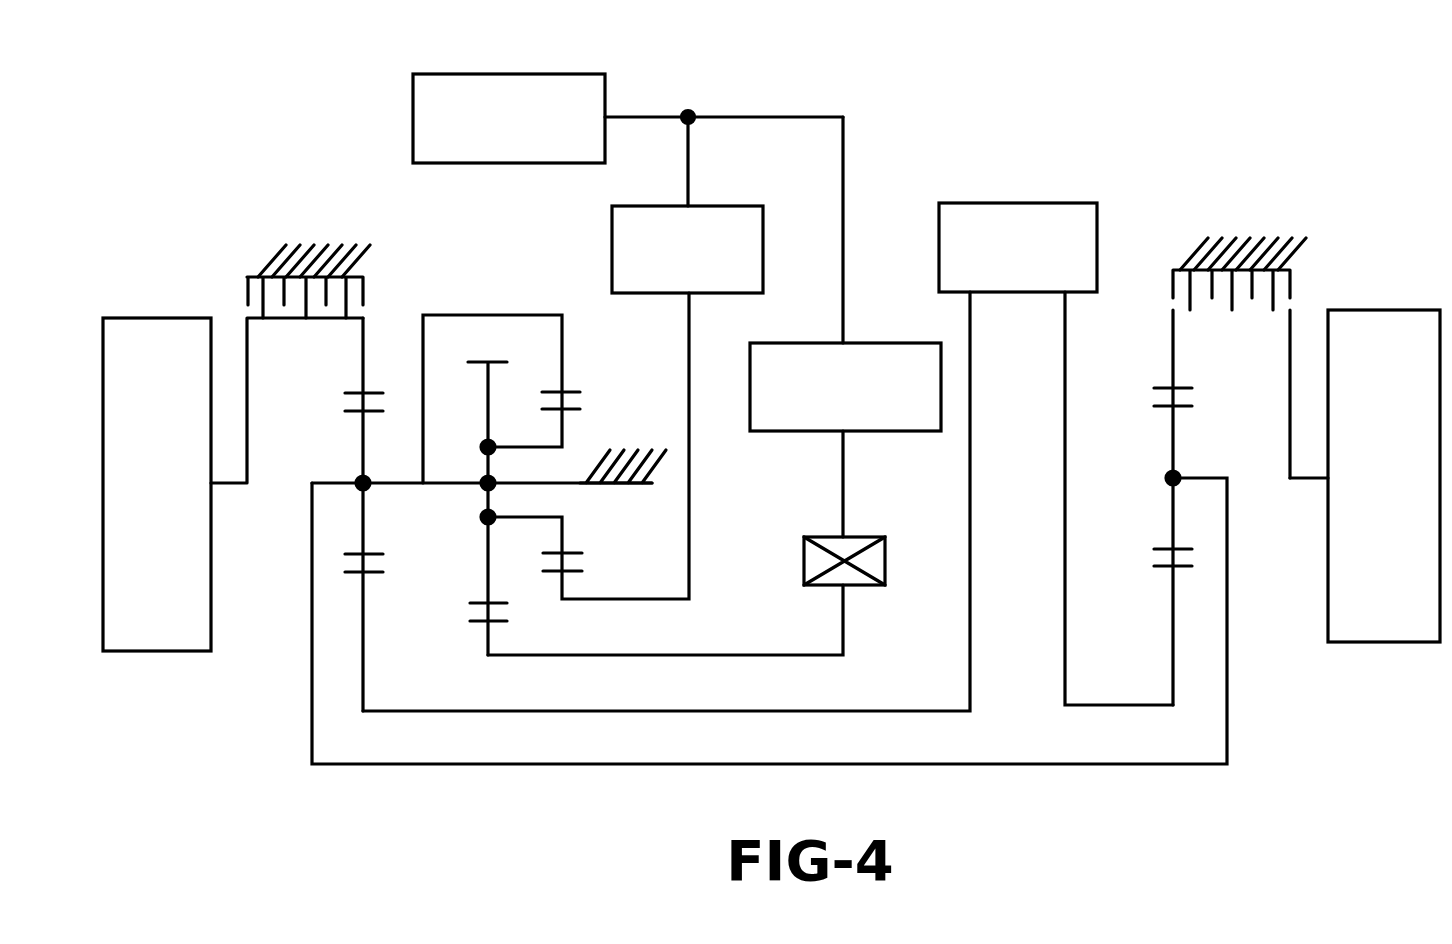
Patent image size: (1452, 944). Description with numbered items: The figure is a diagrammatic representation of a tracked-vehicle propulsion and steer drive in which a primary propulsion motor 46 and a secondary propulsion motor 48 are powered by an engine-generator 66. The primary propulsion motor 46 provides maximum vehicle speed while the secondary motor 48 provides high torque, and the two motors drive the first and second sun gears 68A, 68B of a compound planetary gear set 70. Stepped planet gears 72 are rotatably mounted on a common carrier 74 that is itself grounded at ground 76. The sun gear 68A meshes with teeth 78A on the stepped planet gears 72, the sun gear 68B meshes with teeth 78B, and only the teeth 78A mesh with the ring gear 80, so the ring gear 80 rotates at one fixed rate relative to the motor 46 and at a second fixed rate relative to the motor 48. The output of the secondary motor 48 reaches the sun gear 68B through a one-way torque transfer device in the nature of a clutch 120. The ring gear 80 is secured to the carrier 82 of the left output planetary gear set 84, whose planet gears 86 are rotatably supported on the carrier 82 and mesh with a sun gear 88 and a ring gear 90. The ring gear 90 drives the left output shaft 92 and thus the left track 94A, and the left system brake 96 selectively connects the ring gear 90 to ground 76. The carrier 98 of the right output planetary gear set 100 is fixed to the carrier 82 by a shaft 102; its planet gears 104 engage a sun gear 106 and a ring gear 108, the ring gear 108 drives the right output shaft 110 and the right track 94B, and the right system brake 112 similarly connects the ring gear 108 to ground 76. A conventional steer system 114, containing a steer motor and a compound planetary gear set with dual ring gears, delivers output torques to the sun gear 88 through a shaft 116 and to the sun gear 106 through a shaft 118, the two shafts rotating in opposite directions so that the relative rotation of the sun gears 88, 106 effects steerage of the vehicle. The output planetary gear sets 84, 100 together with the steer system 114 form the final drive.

The primary propulsion motor 46 is at (738, 206).
The secondary propulsion motor 48 is at (888, 343).
The engine-generator 66 is at (487, 74).
The first sun gear 68A is at (662, 599).
The second sun gear 68B is at (488, 640).
The compound planetary gear set 70 is at (481, 290).
The stepped planet gears 72 is at (527, 430).
The common carrier 74 is at (482, 486).
The ground 76 is at (310, 250).
The teeth 78A is at (567, 552).
The teeth 78B is at (483, 600).
The ring gear 80 is at (562, 348).
The carrier 82 is at (335, 483).
The left output planetary gear set 84 is at (381, 292).
The planet gears 86 is at (363, 440).
The sun gear 88 is at (365, 668).
The ring gear 90 is at (363, 366).
The left output shaft 92 is at (232, 483).
The left track 94A is at (183, 318).
The right track 94B is at (1358, 310).
The left system brake 96 is at (240, 285).
The carrier 98 is at (1208, 478).
The right output planetary gear set 100 is at (1160, 282).
The shaft 102 is at (858, 764).
The planet gears 104 is at (1173, 450).
The sun gear 106 is at (1173, 617).
The ring gear 108 is at (1173, 362).
The right output shaft 110 is at (1310, 478).
The right system brake 112 is at (1305, 272).
The steer system 114 is at (1060, 203).
The shaft 116 is at (727, 711).
The shaft 118 is at (1115, 705).
The clutch 120 is at (806, 537).